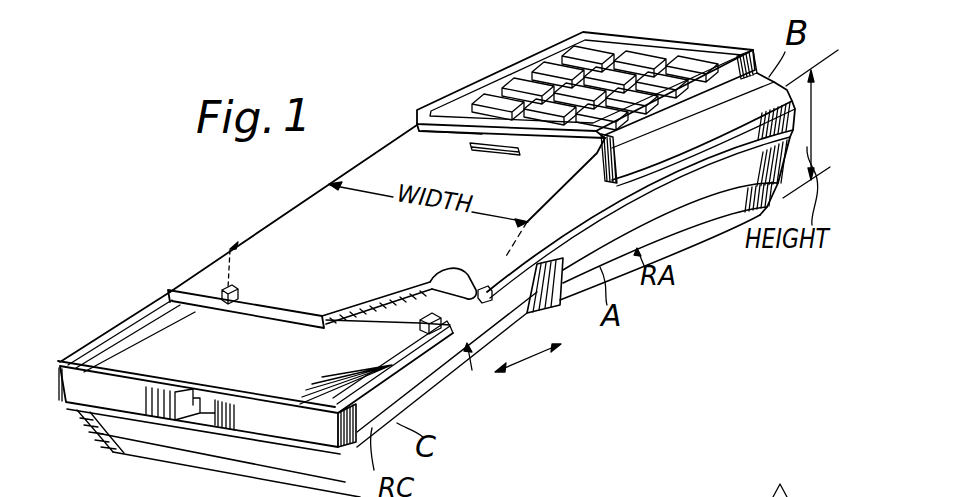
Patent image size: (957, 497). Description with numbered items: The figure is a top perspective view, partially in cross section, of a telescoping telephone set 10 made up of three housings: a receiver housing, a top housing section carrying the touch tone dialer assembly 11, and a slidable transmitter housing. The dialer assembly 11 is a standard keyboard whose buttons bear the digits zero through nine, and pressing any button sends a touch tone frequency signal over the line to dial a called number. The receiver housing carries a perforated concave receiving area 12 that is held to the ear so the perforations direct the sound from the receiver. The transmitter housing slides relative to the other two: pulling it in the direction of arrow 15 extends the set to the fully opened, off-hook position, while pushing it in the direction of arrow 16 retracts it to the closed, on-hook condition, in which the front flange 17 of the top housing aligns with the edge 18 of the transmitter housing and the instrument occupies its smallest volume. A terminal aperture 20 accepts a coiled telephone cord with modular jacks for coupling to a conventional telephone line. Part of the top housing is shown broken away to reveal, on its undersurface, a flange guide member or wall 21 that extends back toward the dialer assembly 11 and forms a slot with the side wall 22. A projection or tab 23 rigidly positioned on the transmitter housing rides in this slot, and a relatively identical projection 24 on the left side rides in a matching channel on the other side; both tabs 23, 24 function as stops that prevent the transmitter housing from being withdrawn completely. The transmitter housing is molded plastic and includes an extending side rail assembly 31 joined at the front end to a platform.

The telescoping telephone set 10 is at (716, 287).
The touch tone dialer assembly 11 is at (665, 52).
The concave receiving area 12 is at (713, 480).
The arrow 15 is at (545, 319).
The arrow 16 is at (503, 392).
The front flange 17 is at (168, 301).
The edge 18 is at (62, 367).
The terminal aperture 20 is at (200, 419).
The flange guide member or wall 21 is at (430, 278).
The side wall 22 is at (484, 292).
The projection or tab 23 is at (420, 325).
The projection 24 is at (216, 254).
The side rail assembly 31 is at (466, 375).